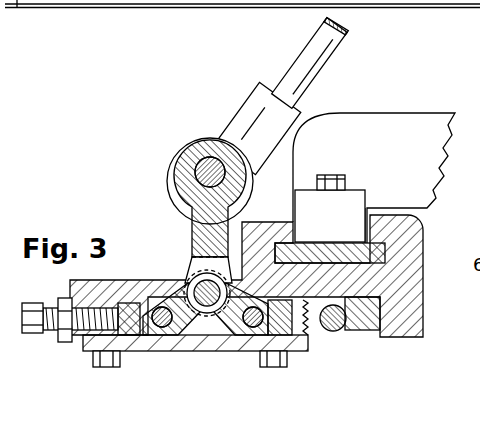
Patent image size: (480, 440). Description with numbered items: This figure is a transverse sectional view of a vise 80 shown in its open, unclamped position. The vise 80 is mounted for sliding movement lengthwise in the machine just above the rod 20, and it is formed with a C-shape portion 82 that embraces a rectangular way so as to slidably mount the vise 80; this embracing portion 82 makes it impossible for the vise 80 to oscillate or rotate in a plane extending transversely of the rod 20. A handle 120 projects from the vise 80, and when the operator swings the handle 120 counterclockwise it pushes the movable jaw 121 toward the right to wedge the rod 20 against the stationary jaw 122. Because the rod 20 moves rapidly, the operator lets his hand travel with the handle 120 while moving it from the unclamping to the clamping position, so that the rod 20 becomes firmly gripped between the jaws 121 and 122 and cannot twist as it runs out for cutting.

The handle 120 is at (301, 53).
The vise 80 is at (150, 238).
The C-shape portion 82 is at (417, 274).
The rod 20 is at (345, 323).
The stationary jaw 122 is at (363, 332).
The movable jaw 121 is at (306, 325).